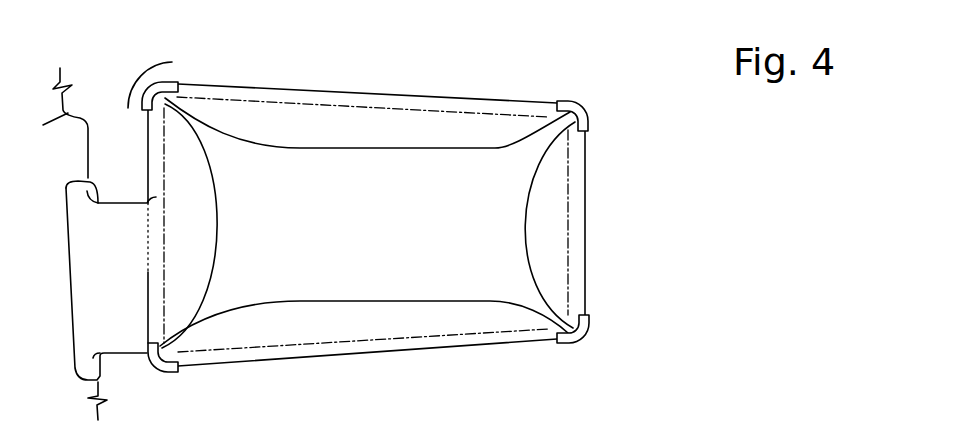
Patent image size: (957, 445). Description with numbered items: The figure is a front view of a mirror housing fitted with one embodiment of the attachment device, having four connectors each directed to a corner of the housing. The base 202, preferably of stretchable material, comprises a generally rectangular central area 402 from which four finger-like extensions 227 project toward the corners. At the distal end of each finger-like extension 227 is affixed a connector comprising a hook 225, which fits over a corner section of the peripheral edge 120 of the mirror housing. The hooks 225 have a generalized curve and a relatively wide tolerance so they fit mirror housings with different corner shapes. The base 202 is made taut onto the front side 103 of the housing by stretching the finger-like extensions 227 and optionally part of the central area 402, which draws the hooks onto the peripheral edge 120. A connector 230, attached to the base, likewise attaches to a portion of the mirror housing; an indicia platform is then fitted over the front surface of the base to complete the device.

The front side 103 is at (558, 194).
The peripheral edge 120 is at (462, 92).
The base 202 is at (370, 303).
The hook 225 is at (586, 105).
The finger-like extension 227 is at (195, 118).
The connector 230 is at (138, 70).
The generally rectangular central area 402 is at (383, 222).